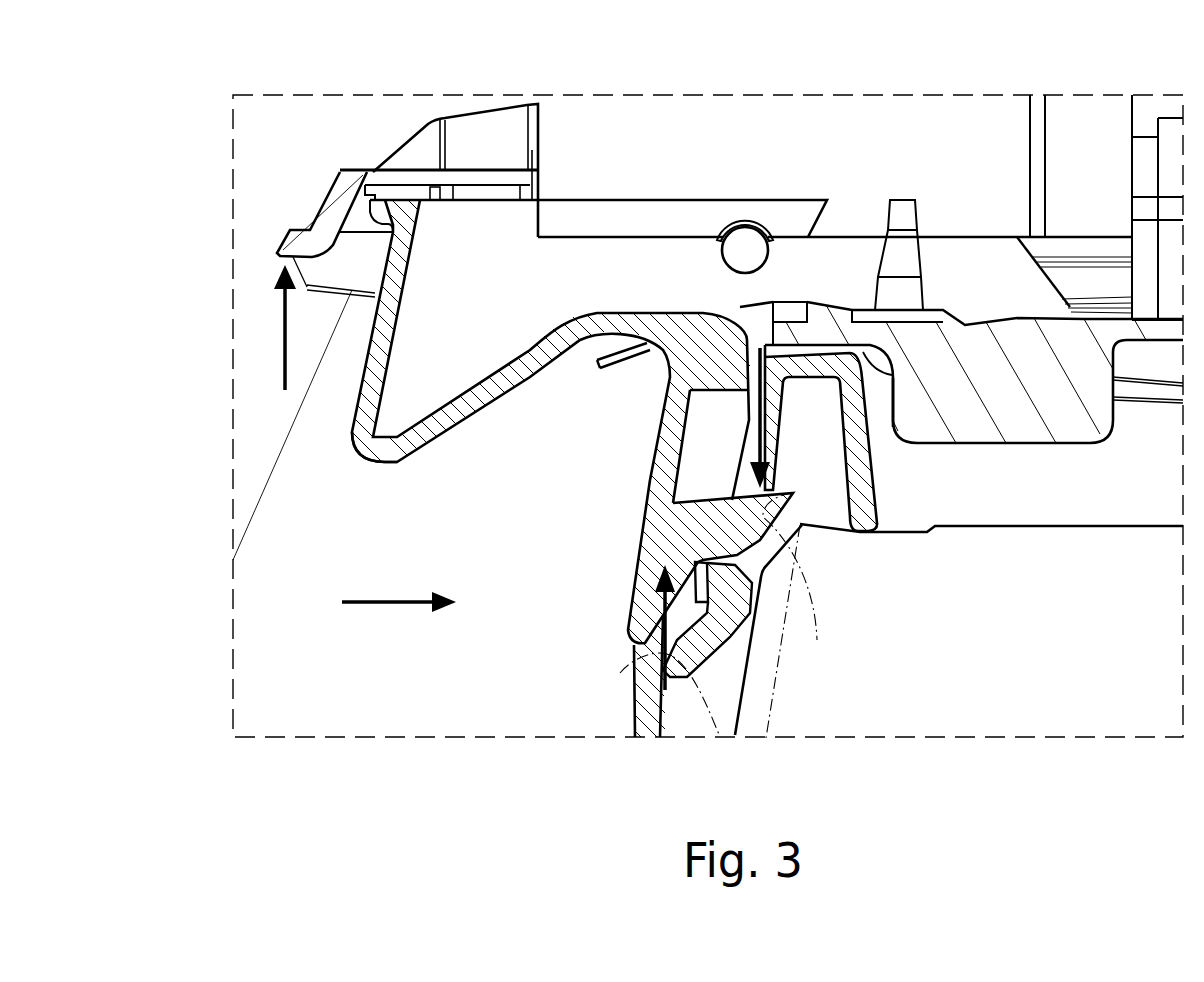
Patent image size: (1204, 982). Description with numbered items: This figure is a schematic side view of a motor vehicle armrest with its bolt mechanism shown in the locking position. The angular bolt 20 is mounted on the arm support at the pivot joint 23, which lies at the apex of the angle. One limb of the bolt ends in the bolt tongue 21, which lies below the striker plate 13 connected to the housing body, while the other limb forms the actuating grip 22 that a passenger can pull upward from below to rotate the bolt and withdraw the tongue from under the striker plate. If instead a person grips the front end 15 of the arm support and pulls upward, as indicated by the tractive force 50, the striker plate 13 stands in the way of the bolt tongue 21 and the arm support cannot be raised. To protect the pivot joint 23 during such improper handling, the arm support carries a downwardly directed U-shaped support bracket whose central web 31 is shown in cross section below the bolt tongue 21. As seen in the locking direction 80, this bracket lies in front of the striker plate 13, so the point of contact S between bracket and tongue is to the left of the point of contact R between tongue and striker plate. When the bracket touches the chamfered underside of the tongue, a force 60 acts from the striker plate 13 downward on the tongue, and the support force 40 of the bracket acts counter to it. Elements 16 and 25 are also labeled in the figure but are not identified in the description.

The striker plate 13 is at (790, 510).
The front end of arm support 15 is at (280, 242).
The wall 16 is at (721, 740).
The bolt 20 is at (563, 267).
The bolt tongue 21 is at (693, 523).
The actuating grip 22 is at (398, 440).
The pivot joint 23 is at (748, 243).
The recess 25 is at (662, 617).
The central web 31 is at (668, 597).
The support force 40 is at (662, 675).
The tractive force 50 is at (276, 318).
The force 60 is at (783, 437).
The locking direction 80 is at (410, 600).
The point of contact between support bracket and bolt tongue S is at (662, 562).
The point of contact between bolt tongue and striker plate R is at (817, 640).